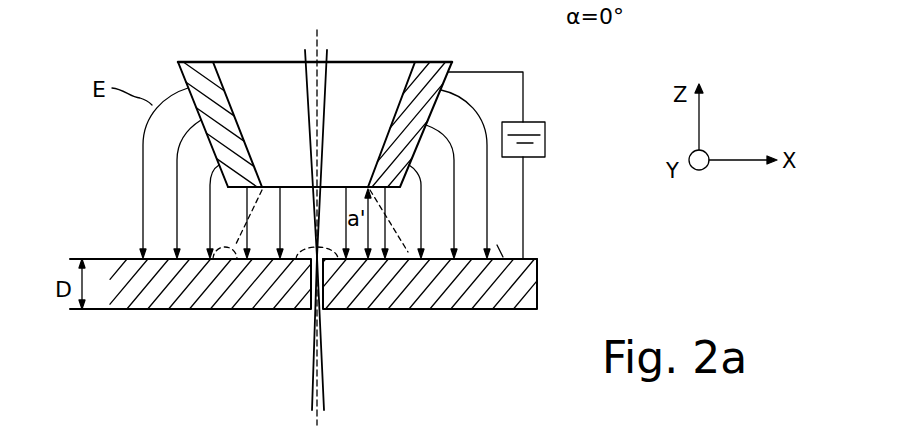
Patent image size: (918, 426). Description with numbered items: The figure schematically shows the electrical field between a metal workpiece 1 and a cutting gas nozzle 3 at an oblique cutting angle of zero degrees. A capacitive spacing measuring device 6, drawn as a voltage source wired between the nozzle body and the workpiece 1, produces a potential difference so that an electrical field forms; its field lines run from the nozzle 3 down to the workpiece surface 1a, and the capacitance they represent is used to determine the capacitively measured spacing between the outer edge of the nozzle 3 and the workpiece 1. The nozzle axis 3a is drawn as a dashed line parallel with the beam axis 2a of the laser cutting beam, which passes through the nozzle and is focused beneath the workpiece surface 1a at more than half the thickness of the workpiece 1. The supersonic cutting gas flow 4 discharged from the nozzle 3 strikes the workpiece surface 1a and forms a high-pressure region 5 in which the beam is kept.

The workpiece 1 is at (538, 252).
The workpiece surface 1a is at (505, 258).
The beam axis 2a is at (328, 48).
The cutting gas nozzle 3 is at (418, 62).
The nozzle axis 3a is at (314, 42).
The supersonic cutting gas flow 4 is at (219, 268).
The high-pressure region 5 is at (292, 262).
The capacitive spacing measuring device 6 is at (545, 128).